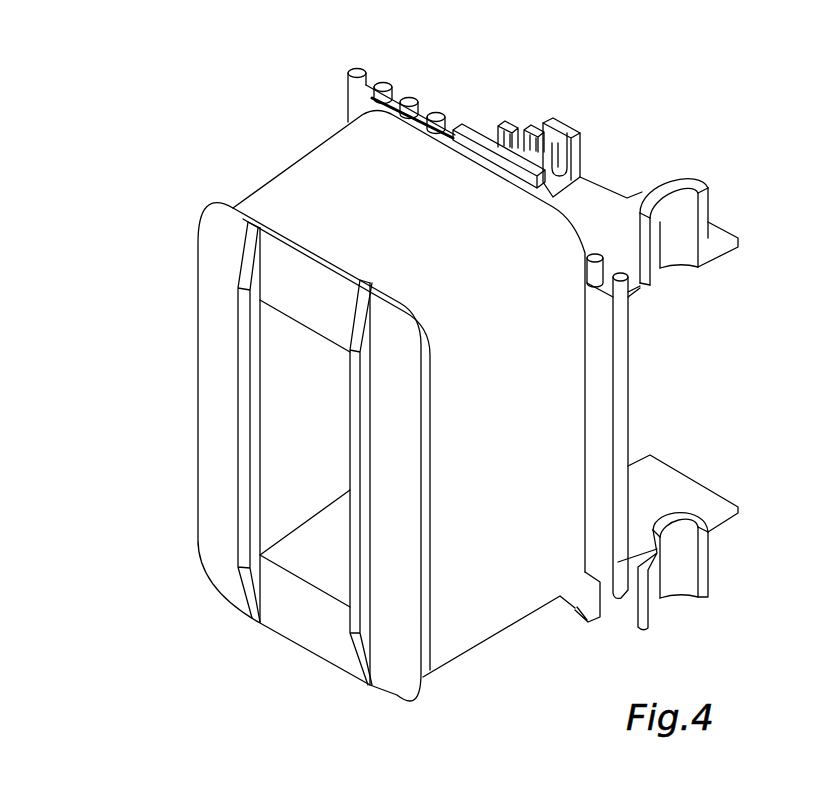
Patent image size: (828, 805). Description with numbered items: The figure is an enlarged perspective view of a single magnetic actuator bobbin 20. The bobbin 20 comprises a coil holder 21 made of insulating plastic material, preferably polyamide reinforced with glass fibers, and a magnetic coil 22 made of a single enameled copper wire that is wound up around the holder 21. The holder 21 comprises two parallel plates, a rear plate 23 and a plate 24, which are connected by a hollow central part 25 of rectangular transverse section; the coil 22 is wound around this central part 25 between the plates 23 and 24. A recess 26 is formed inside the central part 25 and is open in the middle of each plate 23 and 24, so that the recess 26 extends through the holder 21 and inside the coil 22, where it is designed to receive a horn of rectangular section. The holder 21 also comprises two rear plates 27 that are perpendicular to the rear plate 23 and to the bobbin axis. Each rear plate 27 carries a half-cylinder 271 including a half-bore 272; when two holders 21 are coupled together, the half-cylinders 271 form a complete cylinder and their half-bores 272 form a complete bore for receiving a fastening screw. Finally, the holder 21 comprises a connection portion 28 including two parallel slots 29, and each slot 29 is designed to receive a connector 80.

The actuator bobbin 20 is at (125, 94).
The coil holder 21 is at (699, 90).
The magnetic coil 22 is at (328, 207).
The rear plate 23 is at (630, 370).
The plate 24 is at (200, 323).
The hollow central part 25 is at (293, 392).
The recess 26 is at (306, 452).
The rear plate 27 is at (597, 207).
The half-cylinder 271 is at (700, 182).
The half-bore 272 is at (671, 217).
The connection portion 28 is at (540, 140).
The slot 29 is at (507, 119).
The connector 80 is at (498, 130).